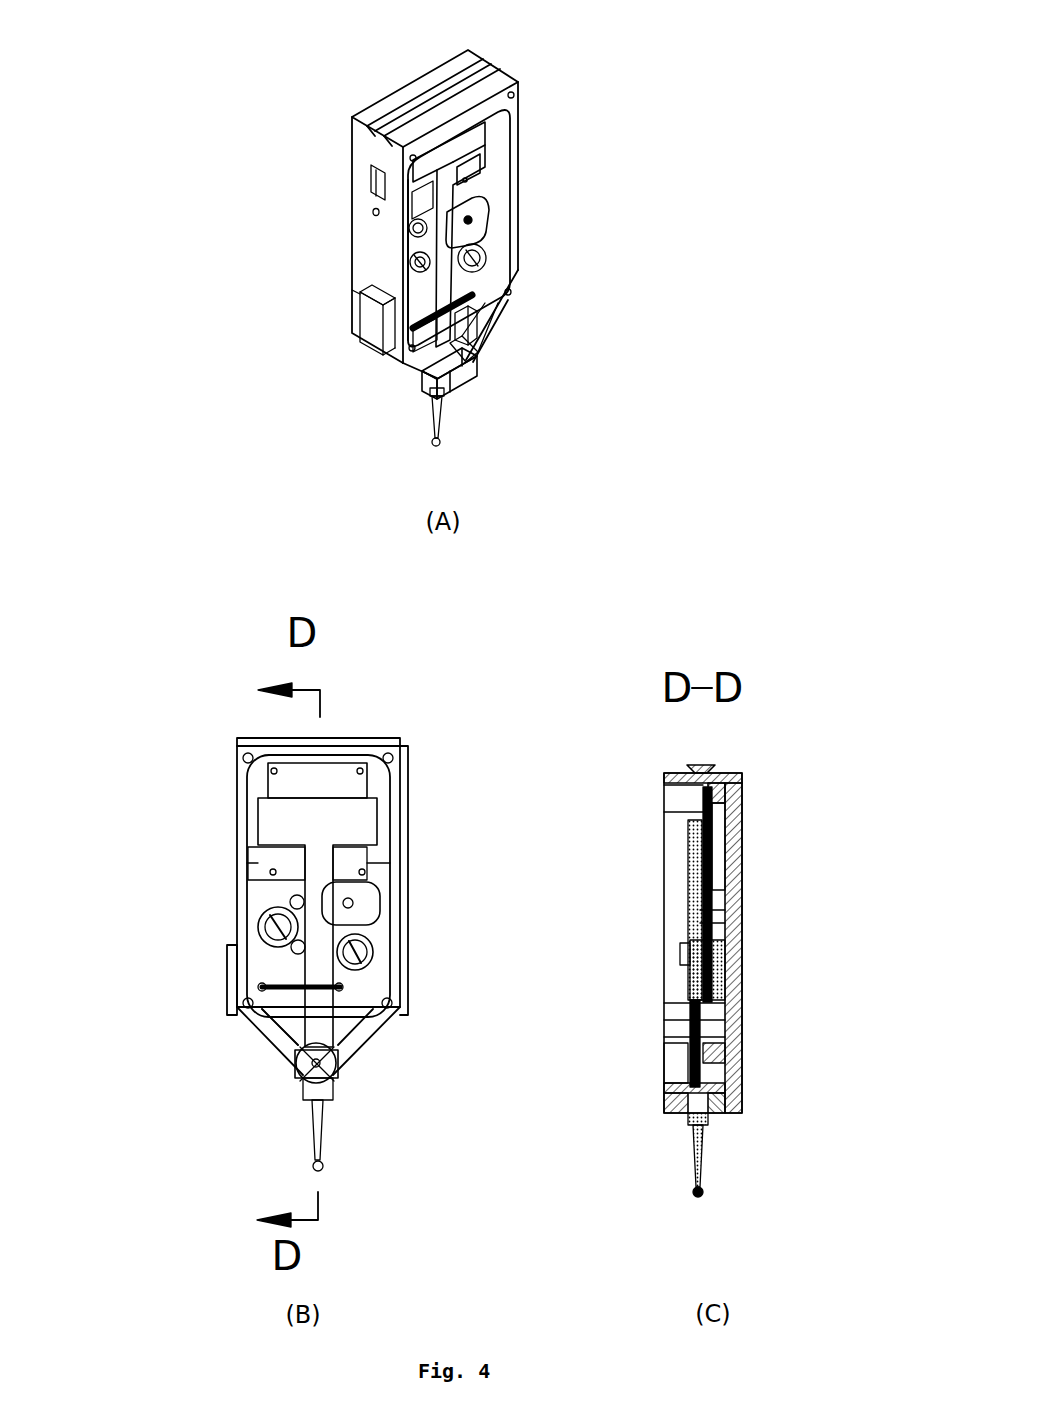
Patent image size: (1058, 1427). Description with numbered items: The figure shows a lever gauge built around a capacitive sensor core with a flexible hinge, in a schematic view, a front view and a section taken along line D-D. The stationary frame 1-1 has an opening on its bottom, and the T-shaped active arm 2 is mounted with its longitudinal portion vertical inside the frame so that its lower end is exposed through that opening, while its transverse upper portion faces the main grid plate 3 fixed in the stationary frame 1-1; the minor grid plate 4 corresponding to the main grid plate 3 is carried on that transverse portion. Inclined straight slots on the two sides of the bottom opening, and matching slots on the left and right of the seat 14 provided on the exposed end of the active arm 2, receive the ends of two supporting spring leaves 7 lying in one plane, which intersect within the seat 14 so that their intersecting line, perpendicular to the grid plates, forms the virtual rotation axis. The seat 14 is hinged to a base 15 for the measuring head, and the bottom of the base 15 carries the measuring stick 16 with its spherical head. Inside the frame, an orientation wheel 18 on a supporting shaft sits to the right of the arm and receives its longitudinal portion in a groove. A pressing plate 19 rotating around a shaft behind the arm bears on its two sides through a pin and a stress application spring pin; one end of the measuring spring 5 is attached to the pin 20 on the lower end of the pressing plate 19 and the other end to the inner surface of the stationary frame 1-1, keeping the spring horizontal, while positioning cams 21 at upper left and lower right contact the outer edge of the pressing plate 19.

In FIG. 4A, the stationary frame 1-1 is at (391, 214).
In FIG. 4B, the stationary frame 1-1 is at (296, 882).
In FIG. 4C, the stationary frame 1-1 is at (727, 921).
In FIG. 4A, the T-shaped active arm 2 is at (412, 180).
In FIG. 4B, the T-shaped active arm 2 is at (272, 776).
In FIG. 4B, the main grid plate 3 is at (281, 904).
In FIG. 4C, the minor grid plate 4 is at (731, 894).
In FIG. 4A, the measuring spring 5 is at (361, 266).
In FIG. 4B, the measuring spring 5 is at (259, 959).
In FIG. 4A, the supporting spring leaves 7 is at (548, 327).
In FIG. 4B, the supporting spring leaves 7 is at (238, 1009).
In FIG. 4A, the seat 14 is at (521, 388).
In FIG. 4B, the seat 14 is at (258, 1051).
In FIG. 4A, the base 15 is at (364, 411).
In FIG. 4B, the base 15 is at (321, 1007).
In FIG. 4A, the measuring stick 16 is at (516, 435).
In FIG. 4B, the measuring stick 16 is at (250, 1135).
In FIG. 4A, the orientation wheel 18 is at (536, 165).
In FIG. 4B, the orientation wheel 18 is at (393, 926).
In FIG. 4C, the orientation wheel 18 is at (730, 1004).
In FIG. 4B, the pressing plate 19 is at (400, 990).
In FIG. 4A, the pin 20 is at (536, 278).
In FIG. 4B, the pin 20 is at (321, 925).
In FIG. 4B, the positioning cams 21 is at (238, 896).